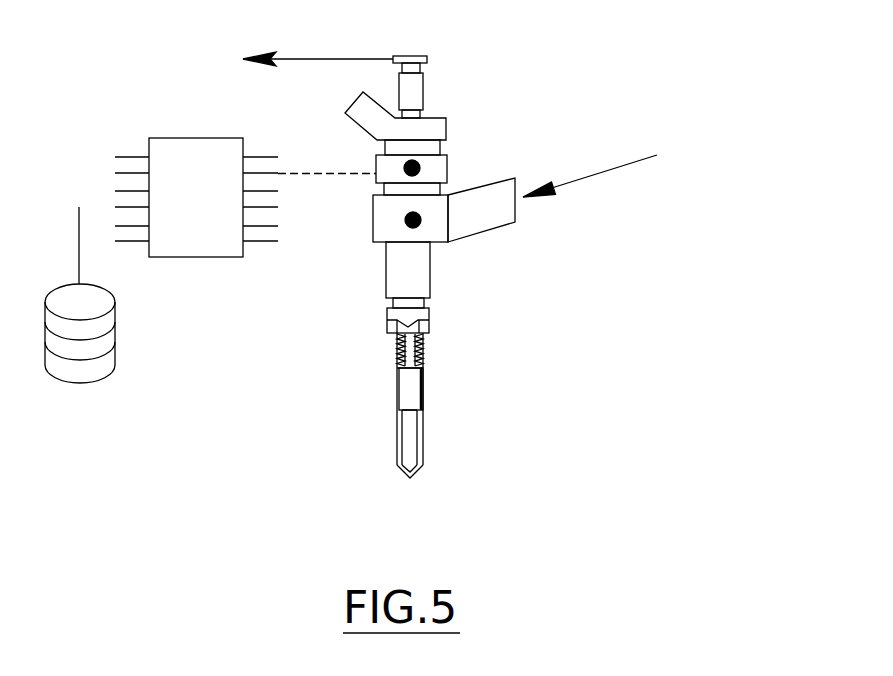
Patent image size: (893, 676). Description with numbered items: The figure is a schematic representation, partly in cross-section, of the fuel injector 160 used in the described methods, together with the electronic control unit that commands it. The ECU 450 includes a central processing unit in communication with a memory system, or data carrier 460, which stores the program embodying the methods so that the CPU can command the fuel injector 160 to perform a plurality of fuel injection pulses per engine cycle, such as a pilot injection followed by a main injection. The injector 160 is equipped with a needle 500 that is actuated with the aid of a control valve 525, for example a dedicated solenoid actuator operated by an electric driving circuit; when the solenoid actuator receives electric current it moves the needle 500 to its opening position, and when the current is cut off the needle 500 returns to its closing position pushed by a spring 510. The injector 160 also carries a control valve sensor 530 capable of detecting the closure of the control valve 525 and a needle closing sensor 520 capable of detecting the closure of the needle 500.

The fuel injector 160 is at (451, 246).
The ECU 450 is at (222, 206).
The data carrier 460 is at (115, 350).
The needle 500 is at (418, 437).
The spring 510 is at (423, 355).
The needle closing sensor 520 is at (412, 168).
The control valve 525 is at (456, 156).
The control valve sensor 530 is at (413, 220).